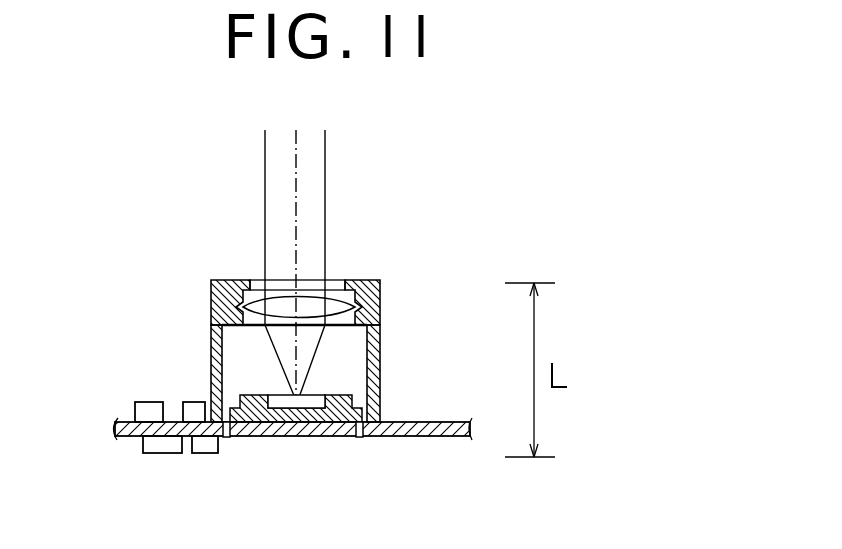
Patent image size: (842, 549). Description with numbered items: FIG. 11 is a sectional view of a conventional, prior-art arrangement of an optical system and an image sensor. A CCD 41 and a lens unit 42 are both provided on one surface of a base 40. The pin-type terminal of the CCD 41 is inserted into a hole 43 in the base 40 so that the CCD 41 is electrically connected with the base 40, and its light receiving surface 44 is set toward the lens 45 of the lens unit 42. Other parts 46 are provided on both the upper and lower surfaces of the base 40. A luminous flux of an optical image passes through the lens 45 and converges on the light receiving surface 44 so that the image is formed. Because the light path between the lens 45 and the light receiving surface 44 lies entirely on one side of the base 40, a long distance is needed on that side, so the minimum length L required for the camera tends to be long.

The base 40 is at (174, 420).
The CCD 41 is at (357, 396).
The lens unit 42 is at (352, 281).
The hole 43 is at (358, 438).
The light receiving surface 44 is at (300, 402).
The lens 45 is at (376, 297).
The other parts 46 is at (126, 412).